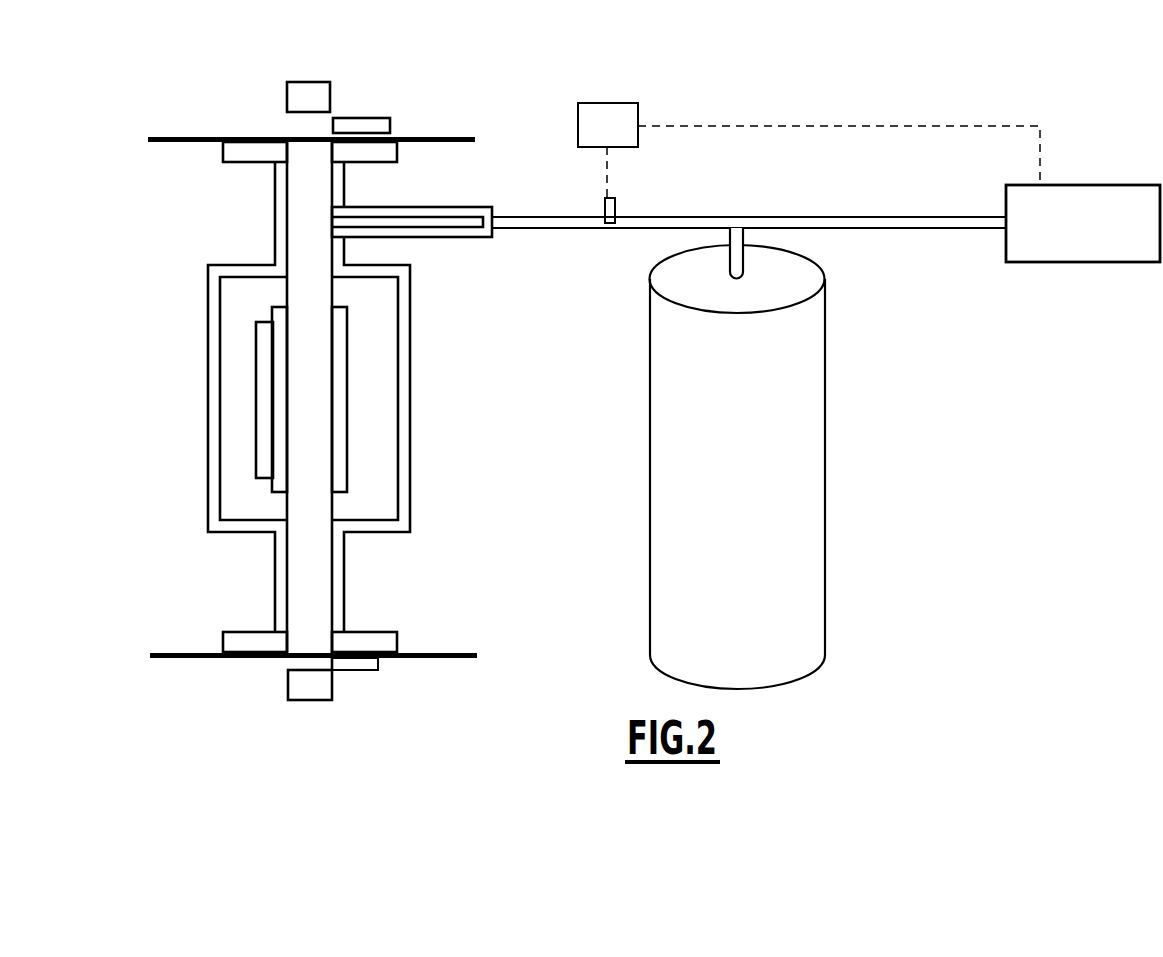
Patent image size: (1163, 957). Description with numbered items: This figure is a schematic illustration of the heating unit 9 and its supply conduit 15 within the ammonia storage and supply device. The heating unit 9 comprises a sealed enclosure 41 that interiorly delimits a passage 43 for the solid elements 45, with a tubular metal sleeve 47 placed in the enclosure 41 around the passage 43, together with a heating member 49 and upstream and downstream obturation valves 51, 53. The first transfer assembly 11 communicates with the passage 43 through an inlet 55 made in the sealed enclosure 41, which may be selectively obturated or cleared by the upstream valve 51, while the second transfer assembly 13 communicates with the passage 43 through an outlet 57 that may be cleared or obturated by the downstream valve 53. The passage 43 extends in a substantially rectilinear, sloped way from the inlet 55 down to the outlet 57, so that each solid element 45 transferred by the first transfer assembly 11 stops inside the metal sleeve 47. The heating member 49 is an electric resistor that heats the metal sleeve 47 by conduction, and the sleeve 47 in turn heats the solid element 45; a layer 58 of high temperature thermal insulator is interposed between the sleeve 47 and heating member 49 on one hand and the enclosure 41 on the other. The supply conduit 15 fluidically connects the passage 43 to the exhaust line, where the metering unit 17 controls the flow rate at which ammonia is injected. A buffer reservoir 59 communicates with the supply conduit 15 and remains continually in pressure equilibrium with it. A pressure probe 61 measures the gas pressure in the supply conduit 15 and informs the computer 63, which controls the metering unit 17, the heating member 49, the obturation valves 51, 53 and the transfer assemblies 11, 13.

The heating unit 9 is at (160, 192).
The first transfer assembly 11 is at (310, 95).
The second transfer assembly 13 is at (315, 688).
The supply conduit 15 is at (893, 218).
The metering unit 17 is at (1085, 190).
The sealed enclosure 41 is at (409, 480).
The passage 43 is at (332, 574).
The solid element 45 is at (298, 453).
The tubular metal sleeve 47 is at (337, 358).
The heating member 49 is at (265, 333).
The upstream obturation valve 51 is at (363, 123).
The downstream obturation valve 53 is at (378, 663).
The inlet 55 is at (285, 162).
The outlet 57 is at (289, 634).
The layer of high temperature thermal insulator 58 is at (380, 310).
The buffer reservoir 59 is at (820, 478).
The pressure probe 61 is at (617, 207).
The computer 63 is at (809, 150).